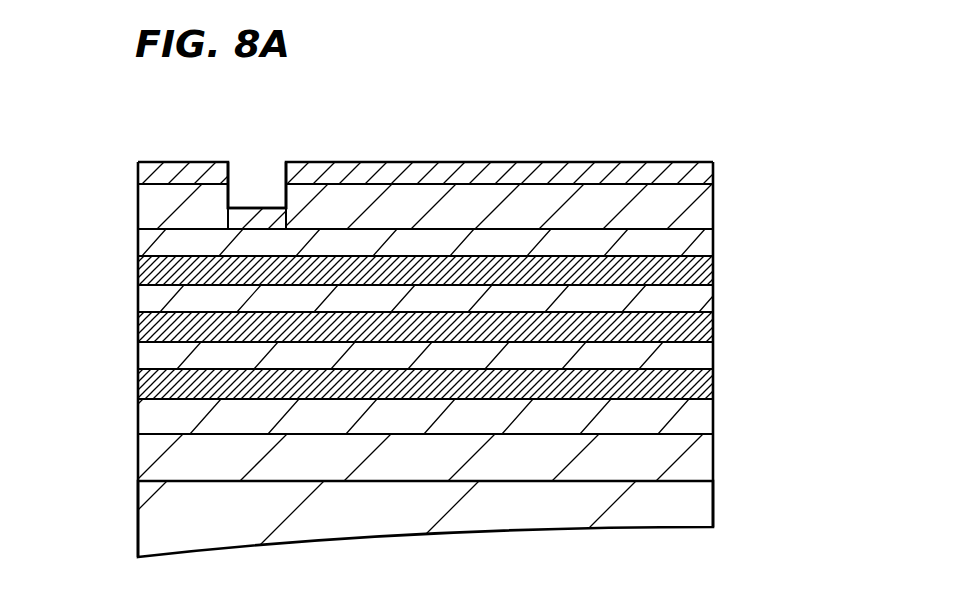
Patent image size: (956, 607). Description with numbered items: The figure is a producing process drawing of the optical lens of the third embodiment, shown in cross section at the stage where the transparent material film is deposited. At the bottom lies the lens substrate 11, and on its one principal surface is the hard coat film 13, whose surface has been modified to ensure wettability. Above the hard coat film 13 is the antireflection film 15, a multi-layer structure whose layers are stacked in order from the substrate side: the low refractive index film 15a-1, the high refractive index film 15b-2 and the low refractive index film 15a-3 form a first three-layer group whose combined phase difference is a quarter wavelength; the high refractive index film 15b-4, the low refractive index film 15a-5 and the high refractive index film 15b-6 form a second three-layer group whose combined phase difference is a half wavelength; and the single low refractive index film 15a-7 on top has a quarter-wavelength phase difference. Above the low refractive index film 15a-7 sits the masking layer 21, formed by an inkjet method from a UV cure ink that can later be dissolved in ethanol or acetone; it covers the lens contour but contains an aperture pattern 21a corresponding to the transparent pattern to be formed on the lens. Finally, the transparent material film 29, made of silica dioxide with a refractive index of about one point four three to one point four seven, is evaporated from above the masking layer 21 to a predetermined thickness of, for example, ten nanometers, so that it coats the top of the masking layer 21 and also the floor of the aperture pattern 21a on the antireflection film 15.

The lens substrate 11 is at (507, 513).
The hard coat film 13 is at (703, 463).
The antireflection film 15 is at (454, 327).
The low refractive index film 15a-1 is at (703, 425).
The high refractive index film 15b-2 is at (703, 397).
The low refractive index film 15a-3 is at (703, 363).
The high refractive index film 15b-4 is at (703, 335).
The low refractive index film 15a-5 is at (703, 302).
The high refractive index film 15b-6 is at (703, 273).
The low refractive index film 15a-7 is at (702, 242).
The masking layer 21 is at (158, 204).
The aperture pattern 21a is at (248, 193).
The transparent material film 29 is at (170, 172).